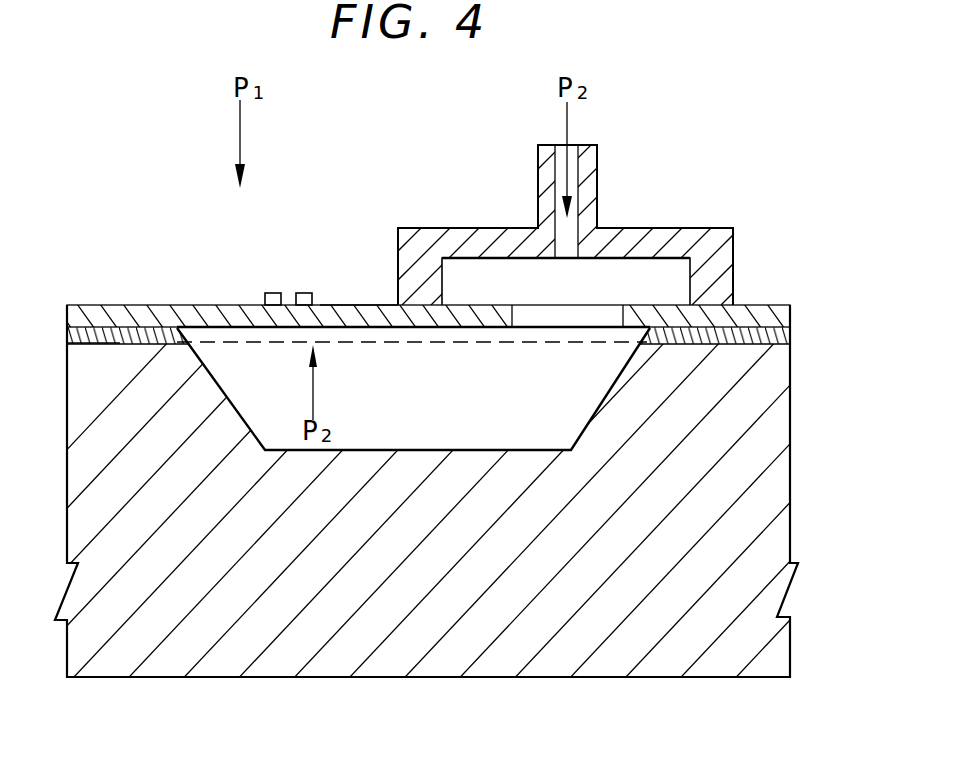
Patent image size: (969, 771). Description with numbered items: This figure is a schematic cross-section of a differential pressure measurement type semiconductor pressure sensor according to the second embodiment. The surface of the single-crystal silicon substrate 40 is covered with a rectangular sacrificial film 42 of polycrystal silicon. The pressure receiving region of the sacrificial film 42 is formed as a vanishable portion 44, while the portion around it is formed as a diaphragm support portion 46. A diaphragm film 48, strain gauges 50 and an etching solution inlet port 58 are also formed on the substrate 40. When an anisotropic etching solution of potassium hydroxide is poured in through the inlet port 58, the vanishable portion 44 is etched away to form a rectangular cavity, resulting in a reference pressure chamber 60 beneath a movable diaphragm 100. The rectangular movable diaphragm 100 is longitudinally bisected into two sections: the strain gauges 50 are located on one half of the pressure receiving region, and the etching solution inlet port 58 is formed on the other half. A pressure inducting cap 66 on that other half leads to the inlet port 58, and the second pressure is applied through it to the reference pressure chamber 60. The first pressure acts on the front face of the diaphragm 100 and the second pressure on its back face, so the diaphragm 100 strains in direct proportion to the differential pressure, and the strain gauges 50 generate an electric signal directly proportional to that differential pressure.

The single-crystal silicon substrate 40 is at (770, 437).
The sacrificial film 42 is at (770, 335).
The vanishable portion 44 is at (395, 330).
The diaphragm support portion 46 is at (90, 342).
The diaphragm film 48 is at (770, 318).
The strain gauges 50 is at (271, 293).
The etching solution inlet port 58 is at (582, 318).
The reference pressure chamber 60 is at (480, 432).
The pressure inducting cap 66 is at (646, 245).
The movable diaphragm 100 is at (354, 313).